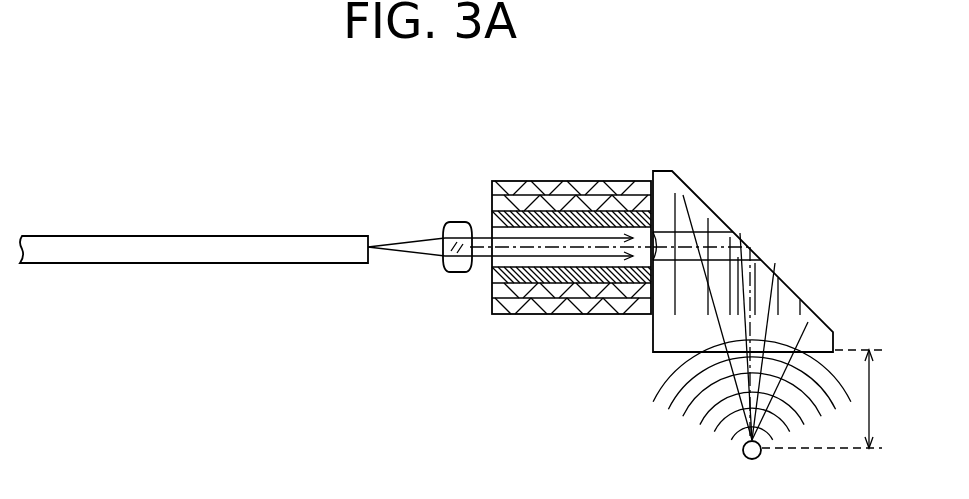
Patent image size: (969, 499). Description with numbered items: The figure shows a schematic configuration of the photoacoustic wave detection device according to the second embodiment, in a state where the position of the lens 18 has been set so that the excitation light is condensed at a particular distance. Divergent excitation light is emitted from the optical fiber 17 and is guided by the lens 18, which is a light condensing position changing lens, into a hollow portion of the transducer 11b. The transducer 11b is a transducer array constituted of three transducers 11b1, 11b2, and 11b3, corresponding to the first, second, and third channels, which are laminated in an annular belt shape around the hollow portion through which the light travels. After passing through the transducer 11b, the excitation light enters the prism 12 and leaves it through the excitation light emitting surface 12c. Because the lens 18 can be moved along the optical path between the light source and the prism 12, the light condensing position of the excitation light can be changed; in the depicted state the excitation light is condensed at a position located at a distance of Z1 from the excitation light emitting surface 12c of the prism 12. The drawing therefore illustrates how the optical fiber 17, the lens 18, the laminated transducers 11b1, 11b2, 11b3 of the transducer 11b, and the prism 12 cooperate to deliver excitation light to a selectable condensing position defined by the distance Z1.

The optical fiber 17 is at (325, 263).
The lens 18 is at (456, 222).
The transducer 11b is at (624, 182).
The transducer (channel CH3) 11b3 is at (565, 186).
The transducer (channel CH2) 11b2 is at (590, 203).
The transducer (channel CH1) 11b1 is at (628, 216).
The prism 12 is at (793, 283).
The excitation light emitting surface 12c is at (662, 353).
The distance Z1 is at (869, 400).